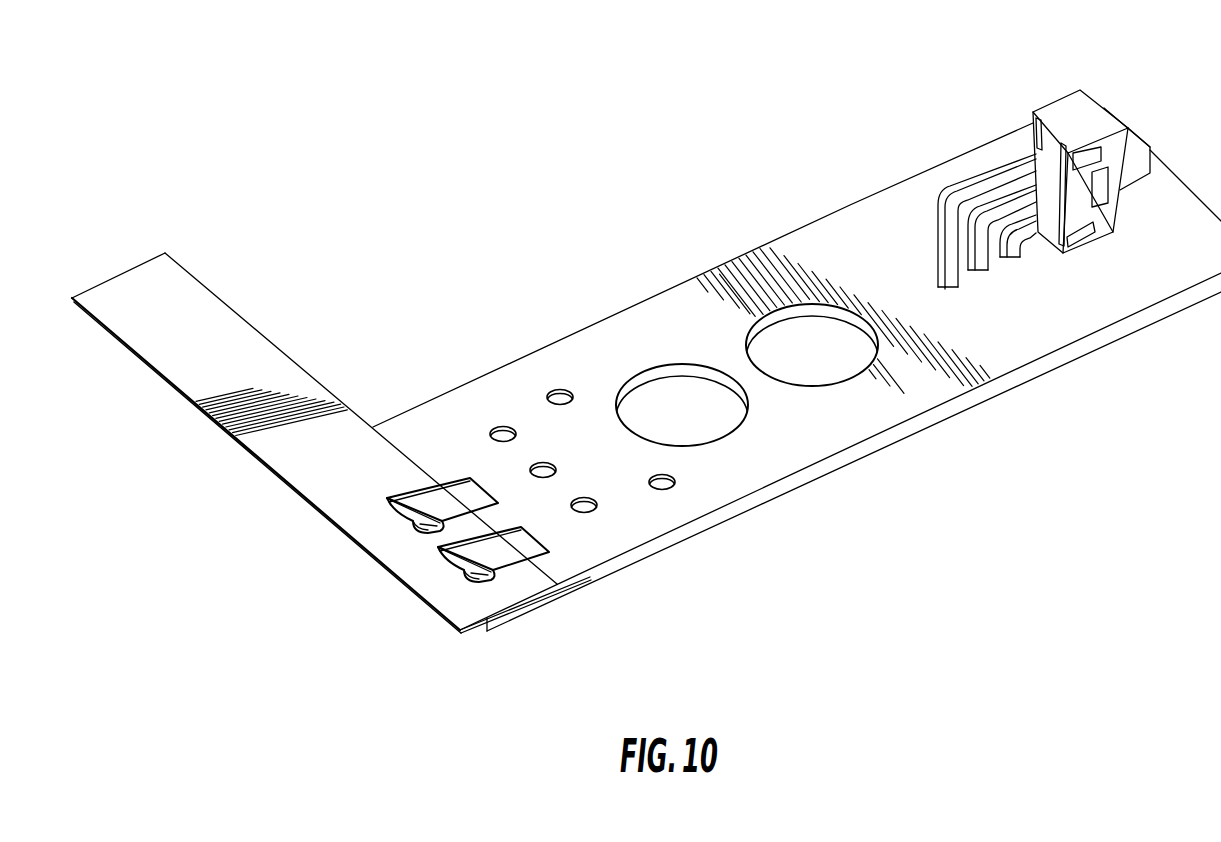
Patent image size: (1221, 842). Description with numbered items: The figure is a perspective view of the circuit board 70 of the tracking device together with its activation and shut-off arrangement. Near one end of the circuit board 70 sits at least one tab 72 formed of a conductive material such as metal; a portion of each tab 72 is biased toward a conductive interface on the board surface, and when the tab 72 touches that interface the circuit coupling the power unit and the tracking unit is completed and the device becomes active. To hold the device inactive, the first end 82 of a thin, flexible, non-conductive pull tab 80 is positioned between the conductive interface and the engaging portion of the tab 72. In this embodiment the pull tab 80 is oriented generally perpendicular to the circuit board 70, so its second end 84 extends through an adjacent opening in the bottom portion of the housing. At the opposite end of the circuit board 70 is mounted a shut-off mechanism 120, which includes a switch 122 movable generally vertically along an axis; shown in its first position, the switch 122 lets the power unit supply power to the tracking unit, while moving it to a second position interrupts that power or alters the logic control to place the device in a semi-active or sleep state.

The circuit board 70 is at (596, 255).
The tab 72 is at (437, 503).
The pull tab 80 is at (300, 447).
The first end 82 is at (468, 603).
The second end 84 is at (143, 297).
The shut-off mechanism 120 is at (1079, 88).
The switch 122 is at (1130, 140).